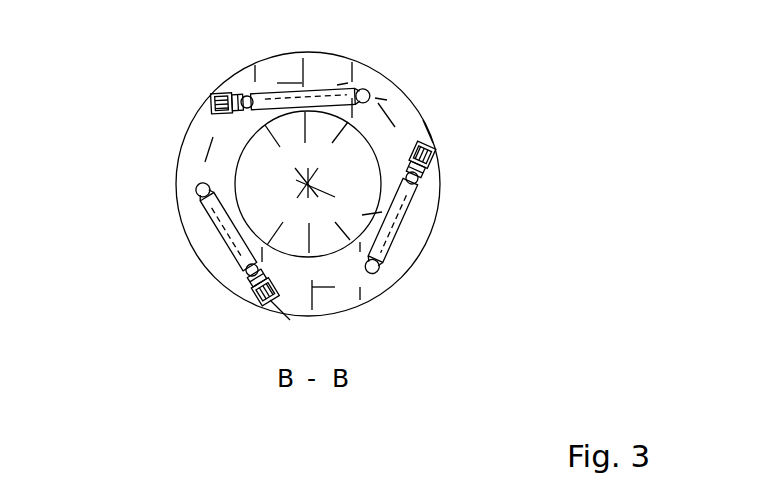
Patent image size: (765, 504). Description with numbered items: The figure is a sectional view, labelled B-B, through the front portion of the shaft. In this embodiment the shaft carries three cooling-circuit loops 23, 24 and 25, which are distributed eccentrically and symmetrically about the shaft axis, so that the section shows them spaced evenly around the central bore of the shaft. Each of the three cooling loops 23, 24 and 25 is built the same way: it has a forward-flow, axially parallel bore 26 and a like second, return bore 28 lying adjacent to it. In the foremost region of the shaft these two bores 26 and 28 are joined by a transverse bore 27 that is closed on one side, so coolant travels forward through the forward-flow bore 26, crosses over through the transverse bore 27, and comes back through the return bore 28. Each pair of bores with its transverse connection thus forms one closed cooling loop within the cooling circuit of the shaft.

The cooling-circuit loop 23 is at (312, 93).
The cooling-circuit loop 24 is at (403, 205).
The cooling-circuit loop 25 is at (237, 252).
The forward-flow bore 26 is at (197, 191).
The transverse bore 27 is at (220, 233).
The return bore 28 is at (262, 276).